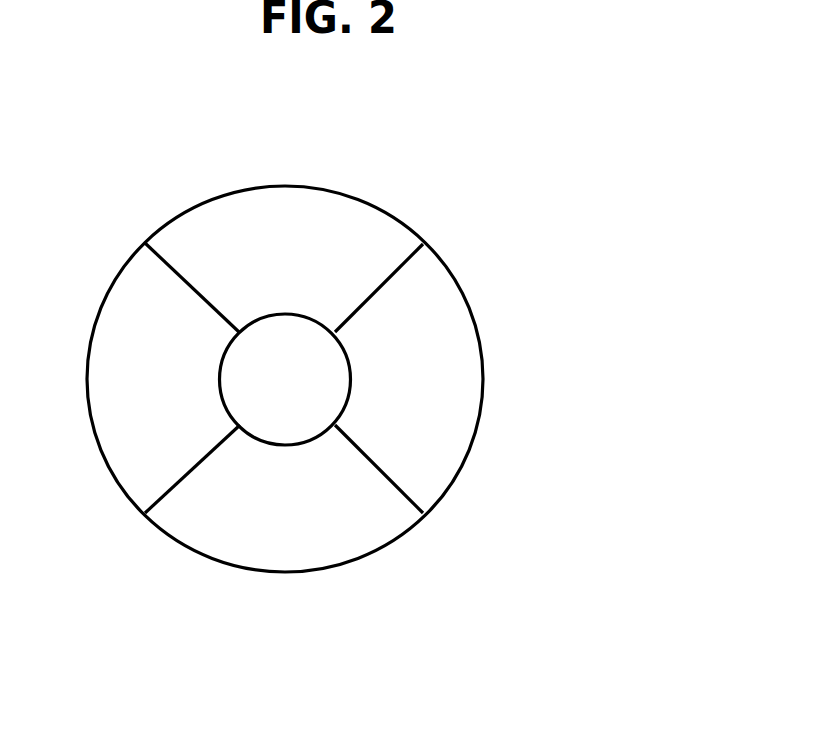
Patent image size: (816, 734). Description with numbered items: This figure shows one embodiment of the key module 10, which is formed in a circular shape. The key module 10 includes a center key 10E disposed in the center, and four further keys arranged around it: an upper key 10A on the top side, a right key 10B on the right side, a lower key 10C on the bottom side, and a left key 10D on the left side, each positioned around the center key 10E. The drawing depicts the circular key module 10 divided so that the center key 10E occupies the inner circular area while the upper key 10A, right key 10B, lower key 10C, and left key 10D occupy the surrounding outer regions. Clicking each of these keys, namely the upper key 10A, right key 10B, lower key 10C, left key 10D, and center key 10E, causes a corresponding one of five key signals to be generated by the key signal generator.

The key module 10 is at (483, 235).
The upper key 10A is at (275, 197).
The right key 10B is at (438, 338).
The lower key 10C is at (315, 543).
The left key 10D is at (100, 397).
The center key 10E is at (305, 390).